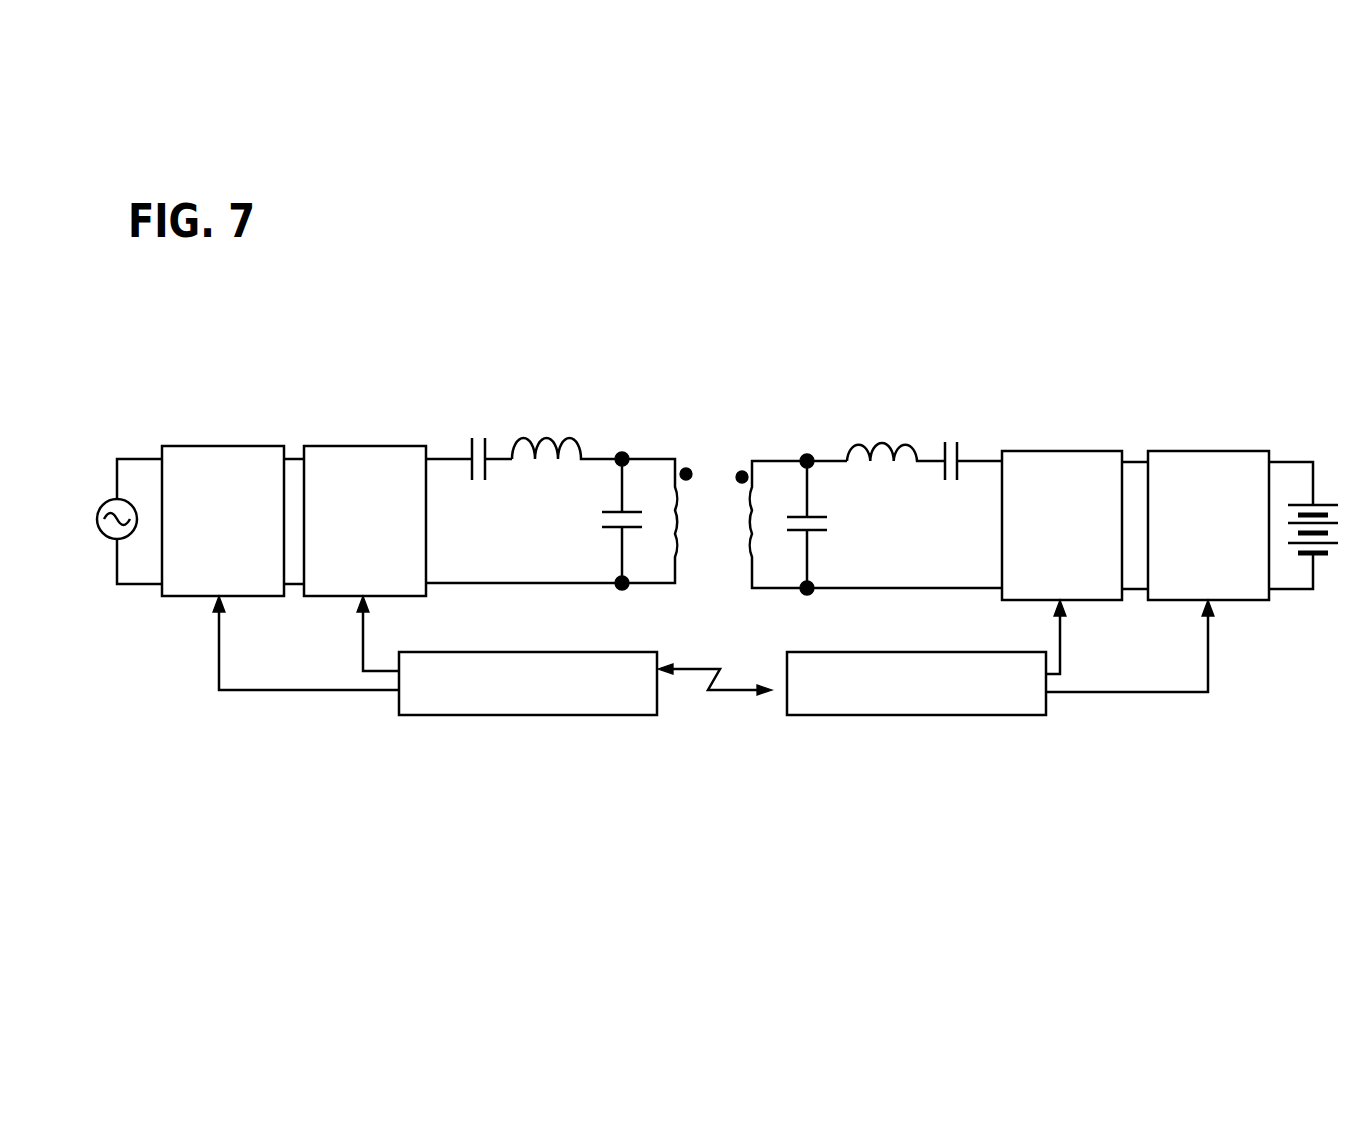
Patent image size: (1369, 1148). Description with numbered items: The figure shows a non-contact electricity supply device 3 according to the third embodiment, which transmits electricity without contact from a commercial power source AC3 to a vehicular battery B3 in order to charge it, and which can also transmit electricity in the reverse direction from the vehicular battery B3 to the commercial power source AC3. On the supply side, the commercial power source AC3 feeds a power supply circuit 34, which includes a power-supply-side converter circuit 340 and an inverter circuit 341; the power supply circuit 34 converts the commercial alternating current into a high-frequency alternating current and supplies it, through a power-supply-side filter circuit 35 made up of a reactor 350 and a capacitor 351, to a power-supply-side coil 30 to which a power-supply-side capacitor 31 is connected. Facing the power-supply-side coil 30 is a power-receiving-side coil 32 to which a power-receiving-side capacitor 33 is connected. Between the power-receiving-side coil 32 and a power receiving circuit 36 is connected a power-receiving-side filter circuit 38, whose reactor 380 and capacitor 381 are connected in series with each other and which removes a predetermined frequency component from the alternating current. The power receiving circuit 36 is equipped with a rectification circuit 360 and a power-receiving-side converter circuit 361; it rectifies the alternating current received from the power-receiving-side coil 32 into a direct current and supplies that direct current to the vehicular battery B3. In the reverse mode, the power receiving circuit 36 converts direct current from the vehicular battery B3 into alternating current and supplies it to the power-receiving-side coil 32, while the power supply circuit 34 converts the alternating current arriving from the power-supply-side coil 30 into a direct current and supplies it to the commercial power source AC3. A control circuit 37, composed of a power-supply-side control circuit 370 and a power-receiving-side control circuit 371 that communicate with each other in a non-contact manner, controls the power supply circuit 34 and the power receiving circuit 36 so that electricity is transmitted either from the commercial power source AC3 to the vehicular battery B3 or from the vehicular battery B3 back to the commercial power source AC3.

The non-contact electricity supply device 3 is at (977, 355).
The power-supply-side coil 30 is at (685, 466).
The power-supply-side capacitor 31 is at (606, 530).
The power-receiving-side coil 32 is at (743, 468).
The power-receiving-side capacitor 33 is at (812, 533).
The power supply circuit 34 is at (303, 394).
The power-supply-side converter circuit 340 is at (225, 446).
The inverter circuit 341 is at (368, 446).
The power-supply-side filter circuit 35 is at (526, 421).
The reactor 350 is at (547, 465).
The capacitor 351 is at (478, 483).
The power receiving circuit 36 is at (1139, 418).
The rectification circuit 360 is at (1066, 451).
The power-receiving-side converter circuit 361 is at (1206, 451).
The control circuit 37 is at (718, 735).
The power-supply-side control circuit 370 is at (553, 717).
The power-receiving-side control circuit 371 is at (869, 717).
The power-receiving-side filter circuit 38 is at (898, 428).
The reactor 380 is at (883, 467).
The capacitor 381 is at (953, 485).
The commercial power source AC3 is at (105, 506).
The vehicular battery B3 is at (1315, 505).